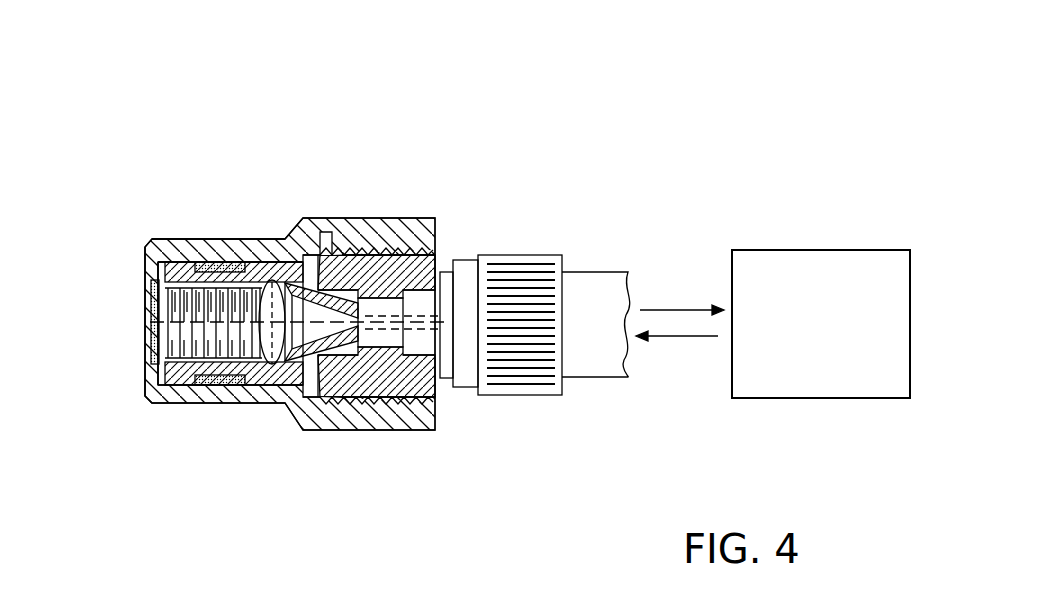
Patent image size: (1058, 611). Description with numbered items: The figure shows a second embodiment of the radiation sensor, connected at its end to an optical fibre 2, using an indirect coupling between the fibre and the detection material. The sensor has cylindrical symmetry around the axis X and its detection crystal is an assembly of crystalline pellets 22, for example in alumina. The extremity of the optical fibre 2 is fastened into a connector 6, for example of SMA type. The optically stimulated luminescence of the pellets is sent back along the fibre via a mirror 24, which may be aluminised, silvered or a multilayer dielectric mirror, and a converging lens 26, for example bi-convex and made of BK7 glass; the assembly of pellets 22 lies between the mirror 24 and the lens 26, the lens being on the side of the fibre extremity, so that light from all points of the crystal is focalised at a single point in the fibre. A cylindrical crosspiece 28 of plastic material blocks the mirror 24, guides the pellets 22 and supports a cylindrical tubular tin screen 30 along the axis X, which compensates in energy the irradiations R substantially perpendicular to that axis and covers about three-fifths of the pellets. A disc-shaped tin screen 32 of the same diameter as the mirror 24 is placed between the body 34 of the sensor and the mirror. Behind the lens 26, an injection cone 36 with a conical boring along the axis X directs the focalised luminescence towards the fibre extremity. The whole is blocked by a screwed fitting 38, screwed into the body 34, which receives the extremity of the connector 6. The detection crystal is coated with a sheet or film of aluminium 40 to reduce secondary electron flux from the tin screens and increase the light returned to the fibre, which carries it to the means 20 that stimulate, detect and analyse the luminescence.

The optical fibre 2 is at (393, 233).
The connector 6 is at (545, 262).
The means 20 is at (817, 268).
The assembly of pellets 22 is at (236, 295).
The mirror 24 is at (150, 250).
The converging lens 26 is at (275, 385).
The cylindrical crosspiece 28 is at (322, 225).
The cylindrical tubular tin screen 30 is at (245, 260).
The tin screen 32 is at (160, 355).
The body 34 is at (420, 235).
The injection cone 36 is at (365, 420).
The screwed fitting 38 is at (435, 390).
The sheet or film of aluminium 40 is at (180, 400).
The axis X is at (228, 385).
The irradiations R is at (212, 148).